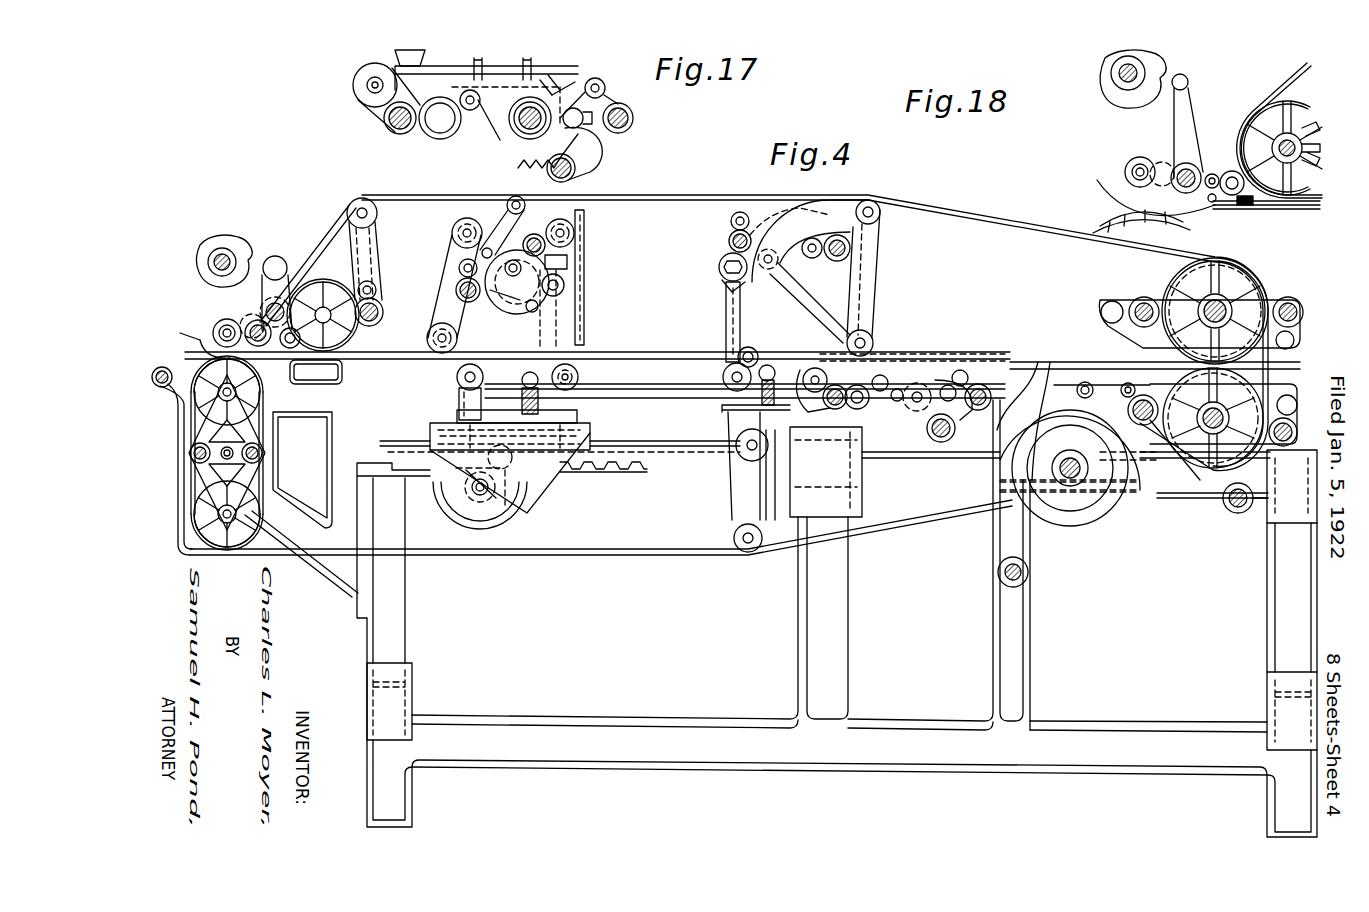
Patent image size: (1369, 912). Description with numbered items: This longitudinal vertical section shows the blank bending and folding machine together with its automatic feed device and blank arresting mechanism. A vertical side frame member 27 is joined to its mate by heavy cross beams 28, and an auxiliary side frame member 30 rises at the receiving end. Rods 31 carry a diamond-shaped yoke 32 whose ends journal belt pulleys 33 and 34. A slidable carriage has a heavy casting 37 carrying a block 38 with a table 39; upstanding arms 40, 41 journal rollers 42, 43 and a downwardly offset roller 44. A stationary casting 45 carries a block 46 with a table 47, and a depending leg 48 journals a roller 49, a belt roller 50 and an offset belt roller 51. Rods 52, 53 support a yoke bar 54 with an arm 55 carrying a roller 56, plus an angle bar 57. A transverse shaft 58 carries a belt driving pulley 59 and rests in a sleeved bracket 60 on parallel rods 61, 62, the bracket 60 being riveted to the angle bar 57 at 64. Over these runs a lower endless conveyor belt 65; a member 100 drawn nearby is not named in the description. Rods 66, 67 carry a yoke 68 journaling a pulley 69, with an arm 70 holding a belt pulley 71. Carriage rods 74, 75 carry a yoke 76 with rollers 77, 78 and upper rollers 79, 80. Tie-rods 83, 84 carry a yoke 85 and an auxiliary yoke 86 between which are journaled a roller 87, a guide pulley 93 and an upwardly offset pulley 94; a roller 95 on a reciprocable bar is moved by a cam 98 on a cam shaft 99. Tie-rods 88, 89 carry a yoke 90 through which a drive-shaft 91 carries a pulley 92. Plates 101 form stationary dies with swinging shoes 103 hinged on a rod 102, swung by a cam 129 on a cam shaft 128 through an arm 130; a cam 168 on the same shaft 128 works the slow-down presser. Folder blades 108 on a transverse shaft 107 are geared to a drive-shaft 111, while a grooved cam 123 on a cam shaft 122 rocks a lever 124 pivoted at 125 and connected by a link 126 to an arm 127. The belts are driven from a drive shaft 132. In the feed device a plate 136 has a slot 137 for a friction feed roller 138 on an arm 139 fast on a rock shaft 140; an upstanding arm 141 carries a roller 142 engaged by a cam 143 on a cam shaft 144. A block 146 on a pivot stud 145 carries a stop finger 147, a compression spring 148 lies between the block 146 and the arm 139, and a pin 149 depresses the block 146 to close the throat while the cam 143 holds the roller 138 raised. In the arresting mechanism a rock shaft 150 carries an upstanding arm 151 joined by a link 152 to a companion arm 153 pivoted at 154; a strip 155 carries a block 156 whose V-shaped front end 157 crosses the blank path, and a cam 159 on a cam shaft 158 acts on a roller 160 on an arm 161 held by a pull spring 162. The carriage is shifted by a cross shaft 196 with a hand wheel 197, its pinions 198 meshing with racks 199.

In FIG. 4, the frame leg 27 is at (838, 608).
In FIG. 4, the frame foot clamp 28 is at (400, 688).
In FIG. 4, the frame opening 30 is at (345, 486).
In FIG. 4, the bracket bolt 31 is at (194, 457).
In FIG. 4, the bracket pivot 32 is at (205, 470).
In FIG. 4, the upper pulley 33 is at (212, 362).
In FIG. 4, the lower pulley 34 is at (212, 536).
In FIG. 4, the gear 37 is at (527, 494).
In FIG. 4, the gear housing 38 is at (514, 512).
In FIG. 4, the housing 39 is at (456, 418).
In FIG. 4, the bracket 40 is at (462, 396).
In FIG. 4, the bar 41 is at (577, 416).
In FIG. 4, the roller 42 is at (464, 377).
In FIG. 4, the roller 43 is at (579, 377).
In FIG. 4, the shaft 44 is at (562, 478).
In FIG. 4, the box 45 is at (815, 472).
In FIG. 4, the bar 46 is at (778, 512).
In FIG. 4, the bracket 47 is at (722, 408).
In FIG. 4, the arm 48 is at (740, 500).
In FIG. 4, the roller 49 is at (734, 538).
In FIG. 4, the roller 50 is at (723, 377).
In FIG. 4, the roller 51 is at (738, 440).
In FIG. 17, the shaft 52 is at (398, 127).
In FIG. 4, the shaft 52 is at (837, 408).
In FIG. 17, the shaft 53 is at (633, 118).
In FIG. 4, the shaft 53 is at (978, 403).
In FIG. 17, the arm 54 is at (495, 120).
In FIG. 4, the arm 54 is at (968, 382).
In FIG. 17, the arm 55 is at (385, 112).
In FIG. 4, the arm 55 is at (818, 393).
In FIG. 17, the pulley 56 is at (368, 90).
In FIG. 4, the pulley 56 is at (800, 372).
In FIG. 4, the rail 57 is at (1044, 366).
In FIG. 4, the gear 58 is at (1228, 400).
In FIG. 4, the belt 59 is at (1190, 470).
In FIG. 4, the bracket 60 is at (1287, 395).
In FIG. 4, the shaft 61 is at (1140, 422).
In FIG. 4, the shaft 62 is at (1293, 434).
In FIG. 4, the pivot bolt 64 is at (1126, 383).
In FIG. 18, the frame rail 65 is at (1300, 211).
In FIG. 4, the frame rail 65 is at (396, 360).
In FIG. 4, the shaft 66 is at (280, 304).
In FIG. 4, the shaft 67 is at (378, 304).
In FIG. 4, the roller 68 is at (340, 290).
In FIG. 18, the pulley 69 is at (1283, 105).
In FIG. 4, the pulley 69 is at (347, 343).
In FIG. 4, the arm 70 is at (364, 256).
In FIG. 4, the pulley 71 is at (378, 214).
In FIG. 4, the shaft 74 is at (456, 288).
In FIG. 4, the shaft 75 is at (545, 247).
In FIG. 4, the roller 76 is at (507, 208).
In FIG. 4, the pulley 77 is at (428, 338).
In FIG. 4, the bar 78 is at (582, 336).
In FIG. 4, the pulley 79 is at (458, 227).
In FIG. 4, the gear 80 is at (572, 224).
In FIG. 4, the shaft 83 is at (730, 238).
In FIG. 4, the shaft 84 is at (838, 236).
In FIG. 4, the arm 85 is at (752, 228).
In FIG. 4, the arm 86 is at (872, 265).
In FIG. 4, the pulley 87 is at (881, 216).
In FIG. 4, the shaft 88 is at (1138, 300).
In FIG. 4, the shaft 89 is at (1290, 300).
In FIG. 4, the arm 90 is at (1156, 332).
In FIG. 4, the hub 91 is at (1212, 298).
In FIG. 4, the pulley 92 is at (1182, 276).
In FIG. 4, the pulley 93 is at (874, 342).
In FIG. 4, the lever 94 is at (769, 270).
In FIG. 4, the bar 95 is at (726, 347).
In FIG. 4, the cam 98 is at (728, 280).
In FIG. 4, the hub 99 is at (726, 263).
In FIG. 18, the belt 100 is at (1290, 68).
In FIG. 4, the belt 100 is at (697, 195).
In FIG. 4, the bar 101 is at (560, 356).
In FIG. 4, the roller 102 is at (565, 290).
In FIG. 4, the block 103 is at (560, 327).
In FIG. 4, the spring 107 is at (525, 378).
In FIG. 4, the pin 108 is at (530, 366).
In FIG. 4, the shaft 111 is at (668, 390).
In FIG. 4, the shaft 122 is at (1078, 480).
In FIG. 4, the drum 123 is at (1073, 530).
In FIG. 4, the lever 124 is at (982, 482).
In FIG. 4, the pivot 125 is at (998, 576).
In FIG. 4, the rod 126 is at (940, 355).
In FIG. 4, the roller 127 is at (756, 352).
In FIG. 4, the shaft 128 is at (505, 268).
In FIG. 4, the disk 129 is at (500, 300).
In FIG. 4, the pin 130 is at (540, 306).
In FIG. 4, the shaft 132 is at (1236, 507).
In FIG. 18, the slide 136 is at (1245, 208).
In FIG. 4, the slide 136 is at (300, 366).
In FIG. 18, the arc 137 is at (1120, 207).
In FIG. 4, the arc 137 is at (205, 345).
In FIG. 18, the roller 138 is at (1124, 165).
In FIG. 4, the roller 138 is at (212, 329).
In FIG. 18, the cam 139 is at (1152, 166).
In FIG. 4, the cam 139 is at (240, 322).
In FIG. 18, the shaft 140 is at (1190, 168).
In FIG. 4, the shaft 140 is at (260, 340).
In FIG. 18, the link 141 is at (1191, 125).
In FIG. 4, the link 141 is at (270, 290).
In FIG. 18, the pin 142 is at (1188, 82).
In FIG. 4, the pin 142 is at (278, 258).
In FIG. 18, the cam 143 is at (1110, 97).
In FIG. 4, the cam 143 is at (225, 250).
In FIG. 18, the shaft 144 is at (1120, 72).
In FIG. 4, the shaft 144 is at (225, 262).
In FIG. 18, the roller 145 is at (1234, 172).
In FIG. 4, the roller 145 is at (300, 350).
In FIG. 18, the rail 146 is at (1247, 206).
In FIG. 18, the rack 147 is at (1154, 221).
In FIG. 18, the pin 148 is at (1213, 173).
In FIG. 18, the pin 149 is at (1214, 202).
In FIG. 17, the pulley 150 is at (527, 126).
In FIG. 4, the pulley 150 is at (906, 402).
In FIG. 17, the link 151 is at (575, 100).
In FIG. 17, the link 152 is at (558, 90).
In FIG. 17, the pin 153 is at (462, 128).
In FIG. 17, the ring 154 is at (434, 126).
In FIG. 17, the bar 155 is at (520, 68).
In FIG. 17, the bracket 156 is at (425, 58).
In FIG. 17, the bar 157 is at (395, 66).
In FIG. 17, the shaft 158 is at (576, 170).
In FIG. 4, the shaft 158 is at (927, 430).
In FIG. 17, the cam 159 is at (593, 157).
In FIG. 4, the cam 159 is at (962, 416).
In FIG. 17, the roller 160 is at (606, 93).
In FIG. 17, the pin 161 is at (560, 128).
In FIG. 17, the spring 162 is at (518, 168).
In FIG. 4, the link 168 is at (490, 300).
In FIG. 4, the arm 196 is at (478, 490).
In FIG. 4, the bar 197 is at (498, 506).
In FIG. 4, the bar 198 is at (486, 497).
In FIG. 4, the rack 199 is at (636, 472).